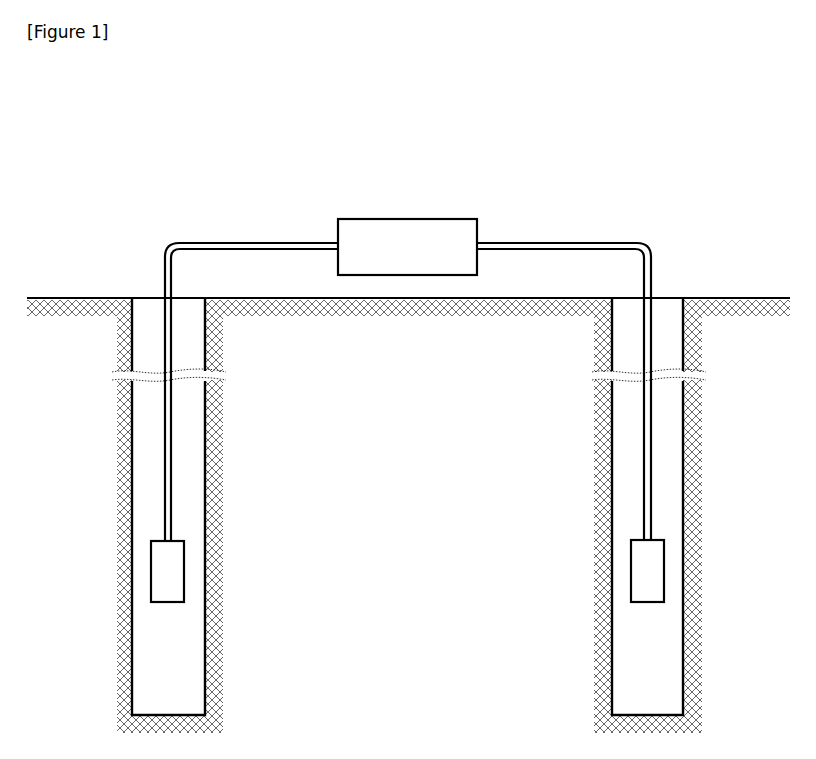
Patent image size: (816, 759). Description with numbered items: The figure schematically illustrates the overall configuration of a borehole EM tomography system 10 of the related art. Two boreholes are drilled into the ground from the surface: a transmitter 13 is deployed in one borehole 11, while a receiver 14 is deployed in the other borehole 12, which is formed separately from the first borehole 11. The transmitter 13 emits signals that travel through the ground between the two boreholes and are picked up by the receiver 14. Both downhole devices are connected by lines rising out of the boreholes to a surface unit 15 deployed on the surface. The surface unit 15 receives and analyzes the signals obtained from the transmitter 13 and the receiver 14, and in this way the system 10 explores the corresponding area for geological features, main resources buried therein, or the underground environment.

The borehole EM tomography system 10 is at (408, 407).
The borehole 11 is at (200, 428).
The borehole 12 is at (608, 428).
The transmitter 13 is at (184, 570).
The receiver 14 is at (631, 573).
The surface unit 15 is at (403, 231).